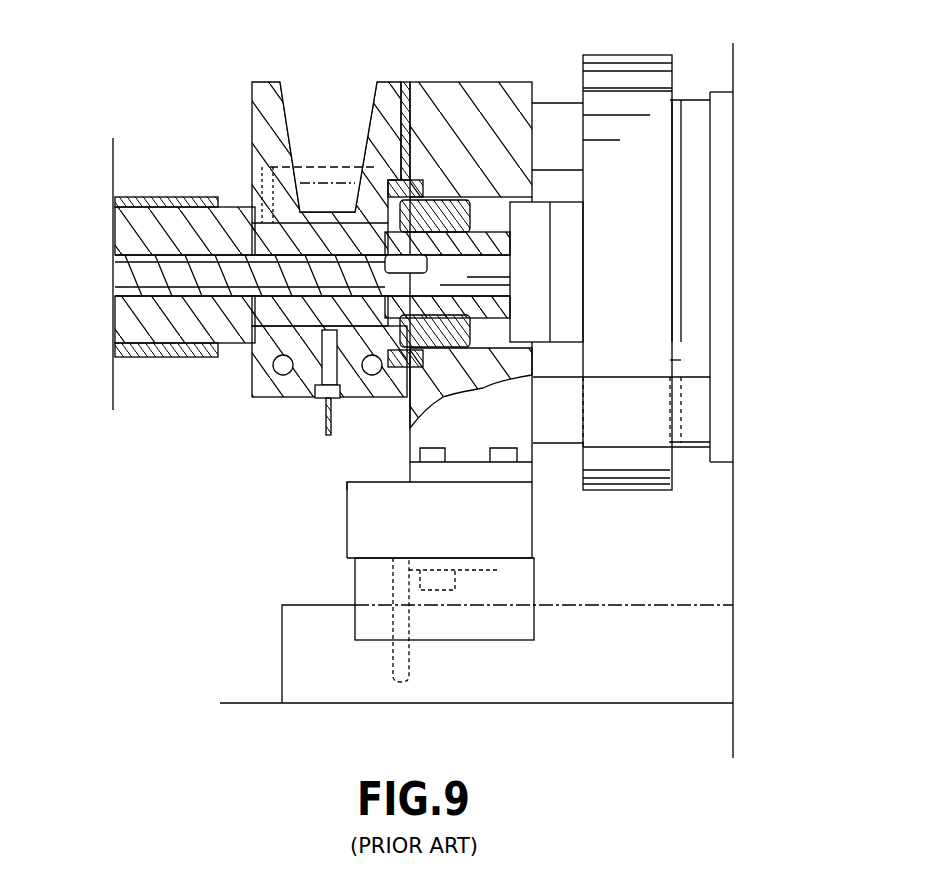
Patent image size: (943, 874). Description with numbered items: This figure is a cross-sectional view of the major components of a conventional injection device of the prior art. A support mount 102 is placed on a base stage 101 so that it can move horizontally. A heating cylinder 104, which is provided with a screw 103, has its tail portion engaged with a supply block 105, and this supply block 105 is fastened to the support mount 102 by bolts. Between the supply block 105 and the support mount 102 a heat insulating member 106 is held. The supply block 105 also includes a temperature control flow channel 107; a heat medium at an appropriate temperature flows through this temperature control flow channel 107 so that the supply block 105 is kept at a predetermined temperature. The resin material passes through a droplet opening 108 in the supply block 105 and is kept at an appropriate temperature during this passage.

The base stage 101 is at (250, 703).
The support mount 102 is at (465, 105).
The screw 103 is at (155, 345).
The heating cylinder 104 is at (118, 242).
The supply block 105 is at (258, 82).
The heat insulating member 106 is at (404, 82).
The temperature control flow channel 107 is at (263, 373).
The droplet opening 108 is at (330, 100).